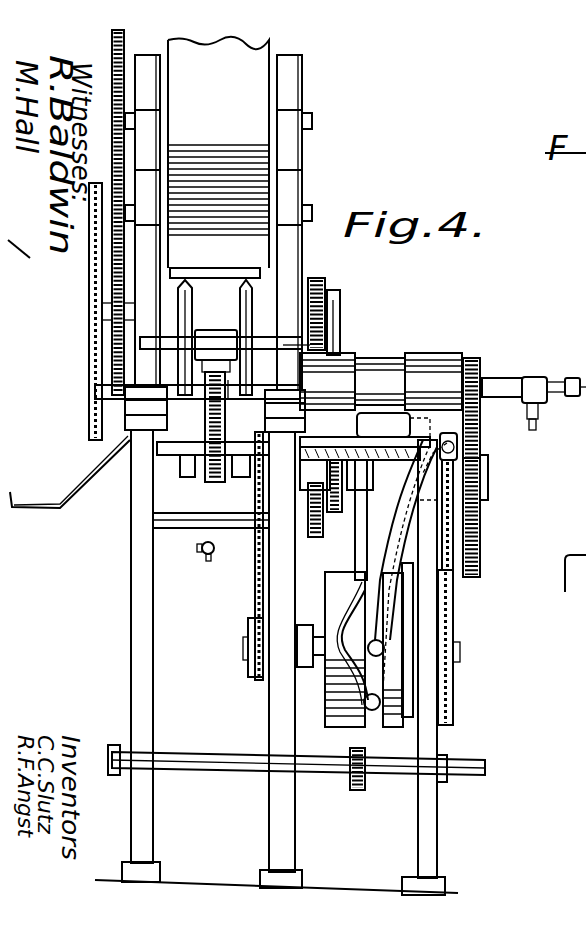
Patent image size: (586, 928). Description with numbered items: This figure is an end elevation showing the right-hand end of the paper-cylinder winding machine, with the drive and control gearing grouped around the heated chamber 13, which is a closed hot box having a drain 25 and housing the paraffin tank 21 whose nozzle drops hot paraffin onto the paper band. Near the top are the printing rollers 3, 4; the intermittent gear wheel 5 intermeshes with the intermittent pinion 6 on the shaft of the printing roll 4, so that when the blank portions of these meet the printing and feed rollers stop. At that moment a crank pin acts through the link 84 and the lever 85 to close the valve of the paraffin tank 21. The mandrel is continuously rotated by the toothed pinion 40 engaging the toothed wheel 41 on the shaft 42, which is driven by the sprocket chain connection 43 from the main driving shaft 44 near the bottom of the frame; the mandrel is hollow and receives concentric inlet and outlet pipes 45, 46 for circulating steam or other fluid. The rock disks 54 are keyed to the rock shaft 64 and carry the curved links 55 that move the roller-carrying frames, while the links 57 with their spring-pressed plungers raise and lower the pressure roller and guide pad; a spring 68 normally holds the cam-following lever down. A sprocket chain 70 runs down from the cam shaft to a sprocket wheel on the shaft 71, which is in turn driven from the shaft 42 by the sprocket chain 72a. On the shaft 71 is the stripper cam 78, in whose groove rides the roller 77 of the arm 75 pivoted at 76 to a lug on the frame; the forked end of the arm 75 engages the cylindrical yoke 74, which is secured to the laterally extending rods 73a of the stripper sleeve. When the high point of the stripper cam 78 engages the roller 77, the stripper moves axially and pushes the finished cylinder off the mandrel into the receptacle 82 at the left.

The printing roller 3 is at (218, 152).
The printing roll 4 is at (250, 252).
The paraffin tank 21 is at (210, 300).
The curved links 55 is at (246, 295).
The disks 54 is at (182, 330).
The spring 68 is at (224, 385).
The rock shaft 64 is at (283, 345).
The intermittent pinion 6 is at (325, 295).
The link 84 is at (340, 300).
The lever 85 is at (340, 333).
The toothed pinion 40 is at (472, 365).
The toothed wheel 41 is at (480, 545).
The shaft 42 is at (488, 472).
The outlet pipe 46 is at (502, 380).
The inlet pipe 45 is at (552, 382).
The rods 73a is at (402, 456).
The yoke 74 is at (460, 445).
The sprocket chain 72a is at (452, 563).
The intermittent gear wheel 5 is at (315, 538).
The sprocket chain connection 43 is at (356, 540).
The arm 75 is at (398, 526).
The stripper cam 78 is at (346, 649).
The pivot 76 is at (371, 711).
The roller 77 is at (384, 648).
The shaft 71 is at (243, 643).
The sprocket chain 70 is at (255, 572).
The links 57 is at (234, 466).
The heated chamber 13 is at (183, 495).
The drain 25 is at (208, 555).
The receptacle 82 is at (70, 472).
The main driving shaft 44 is at (342, 770).